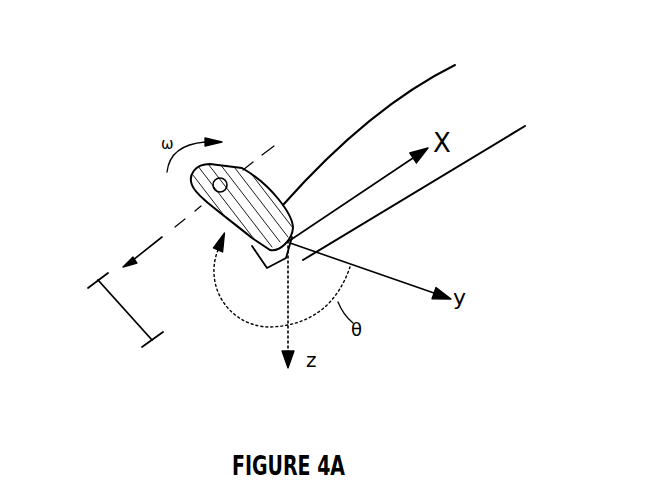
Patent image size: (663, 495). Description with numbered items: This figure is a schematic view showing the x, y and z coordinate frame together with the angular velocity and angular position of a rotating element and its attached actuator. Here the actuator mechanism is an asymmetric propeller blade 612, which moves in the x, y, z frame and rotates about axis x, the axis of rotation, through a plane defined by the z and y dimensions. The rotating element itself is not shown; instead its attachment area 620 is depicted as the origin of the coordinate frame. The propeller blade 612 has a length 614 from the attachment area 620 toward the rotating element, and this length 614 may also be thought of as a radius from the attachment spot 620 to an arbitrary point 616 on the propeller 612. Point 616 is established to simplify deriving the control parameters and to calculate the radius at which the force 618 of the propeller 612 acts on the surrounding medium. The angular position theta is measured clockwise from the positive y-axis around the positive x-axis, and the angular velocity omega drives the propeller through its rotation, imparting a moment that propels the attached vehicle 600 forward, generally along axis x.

The vehicle 600 is at (437, 85).
The propeller blade 612 is at (228, 164).
The length 614 is at (137, 342).
The arbitrary point 616 is at (196, 186).
The force 618 is at (154, 247).
The attachment area 620 is at (310, 237).